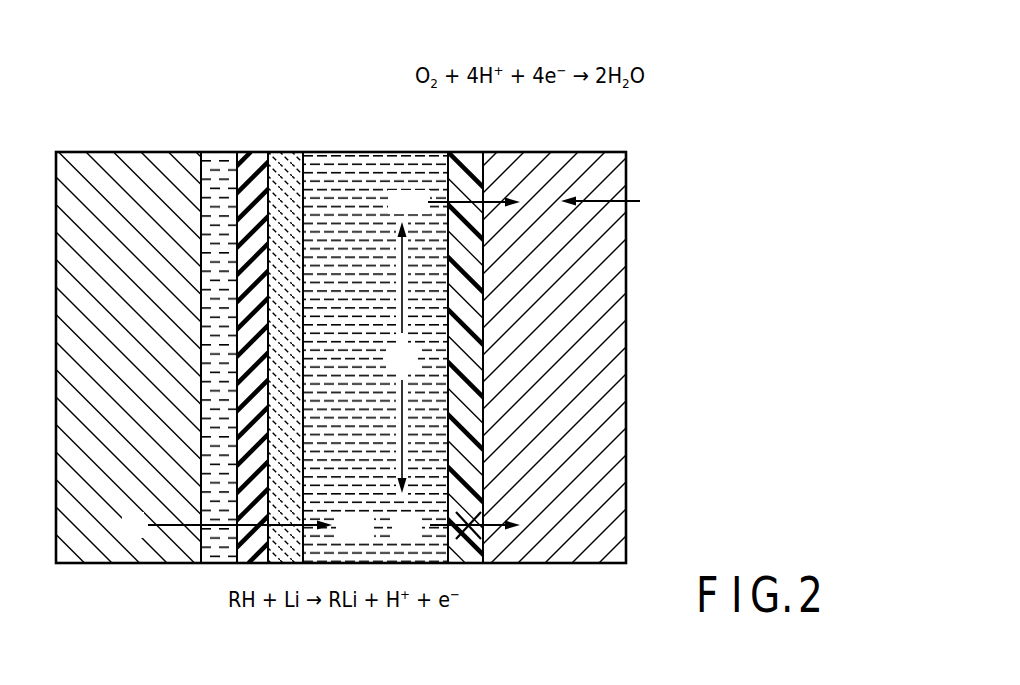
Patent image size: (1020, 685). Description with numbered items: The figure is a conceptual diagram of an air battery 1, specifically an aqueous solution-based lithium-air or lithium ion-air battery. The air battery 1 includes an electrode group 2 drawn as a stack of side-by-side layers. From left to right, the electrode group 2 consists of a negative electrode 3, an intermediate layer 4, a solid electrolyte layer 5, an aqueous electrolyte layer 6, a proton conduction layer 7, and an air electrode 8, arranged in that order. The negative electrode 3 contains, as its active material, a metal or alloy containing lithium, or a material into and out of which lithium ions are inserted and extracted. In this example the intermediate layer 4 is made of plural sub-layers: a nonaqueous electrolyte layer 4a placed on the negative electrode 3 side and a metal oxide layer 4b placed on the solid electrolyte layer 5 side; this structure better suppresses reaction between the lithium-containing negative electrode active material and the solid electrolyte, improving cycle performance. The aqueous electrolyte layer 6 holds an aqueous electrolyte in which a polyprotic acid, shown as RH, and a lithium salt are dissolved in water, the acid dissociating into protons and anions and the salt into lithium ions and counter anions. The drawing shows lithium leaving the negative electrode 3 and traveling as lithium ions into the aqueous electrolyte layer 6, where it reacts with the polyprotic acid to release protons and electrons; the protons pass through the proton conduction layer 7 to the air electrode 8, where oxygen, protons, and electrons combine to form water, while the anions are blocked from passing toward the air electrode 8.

The air battery 1 is at (344, 40).
The electrode group 2 is at (99, 82).
The negative electrode 3 is at (128, 166).
The intermediate layer 4 is at (197, 98).
The nonaqueous electrolyte layer 4a is at (220, 156).
The metal oxide layer 4b is at (255, 156).
The solid electrolyte layer 5 is at (289, 159).
The aqueous electrolyte layer 6 is at (377, 163).
The proton conduction layer 7 is at (466, 160).
The air electrode 8 is at (556, 165).